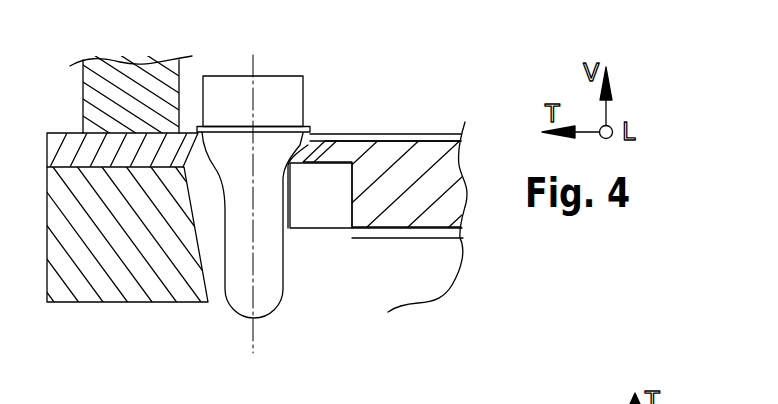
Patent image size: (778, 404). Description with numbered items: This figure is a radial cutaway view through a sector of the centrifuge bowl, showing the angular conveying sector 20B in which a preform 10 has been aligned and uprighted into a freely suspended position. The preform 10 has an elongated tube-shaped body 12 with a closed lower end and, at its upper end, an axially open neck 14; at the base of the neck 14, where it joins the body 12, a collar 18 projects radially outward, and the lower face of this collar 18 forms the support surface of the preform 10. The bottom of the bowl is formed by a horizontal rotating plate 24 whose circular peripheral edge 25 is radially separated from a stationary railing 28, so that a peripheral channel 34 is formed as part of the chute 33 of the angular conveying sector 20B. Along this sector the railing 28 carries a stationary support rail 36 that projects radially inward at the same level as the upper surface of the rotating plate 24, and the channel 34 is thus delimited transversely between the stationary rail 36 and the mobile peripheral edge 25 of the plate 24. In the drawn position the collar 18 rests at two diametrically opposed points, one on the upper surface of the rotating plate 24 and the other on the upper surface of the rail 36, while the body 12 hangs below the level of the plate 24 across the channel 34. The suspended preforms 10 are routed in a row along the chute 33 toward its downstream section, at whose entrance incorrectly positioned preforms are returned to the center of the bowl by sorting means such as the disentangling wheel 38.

The preform 10 is at (289, 290).
The body 12 is at (242, 267).
The neck 14 is at (270, 93).
The collar 18 is at (243, 125).
The angular conveying sector 20B is at (388, 187).
The rotating plate 24 is at (415, 180).
The peripheral edge 25 is at (300, 150).
The railing 28 is at (120, 90).
The chute 33 is at (207, 182).
The peripheral channel 34 is at (308, 158).
The stationary support rail 36 is at (72, 147).
The disentangling wheel 38 is at (315, 192).